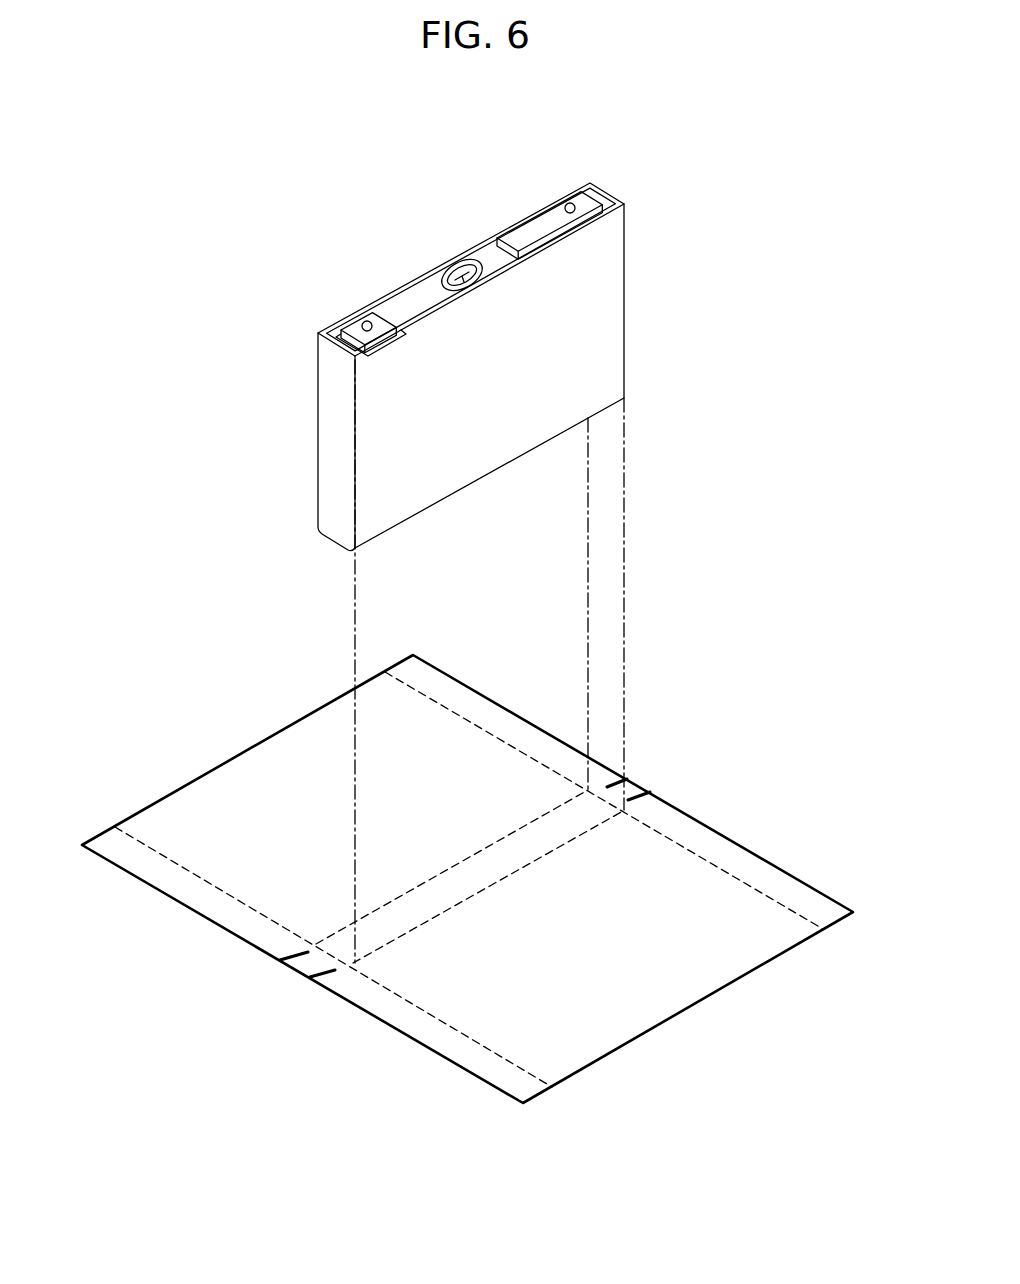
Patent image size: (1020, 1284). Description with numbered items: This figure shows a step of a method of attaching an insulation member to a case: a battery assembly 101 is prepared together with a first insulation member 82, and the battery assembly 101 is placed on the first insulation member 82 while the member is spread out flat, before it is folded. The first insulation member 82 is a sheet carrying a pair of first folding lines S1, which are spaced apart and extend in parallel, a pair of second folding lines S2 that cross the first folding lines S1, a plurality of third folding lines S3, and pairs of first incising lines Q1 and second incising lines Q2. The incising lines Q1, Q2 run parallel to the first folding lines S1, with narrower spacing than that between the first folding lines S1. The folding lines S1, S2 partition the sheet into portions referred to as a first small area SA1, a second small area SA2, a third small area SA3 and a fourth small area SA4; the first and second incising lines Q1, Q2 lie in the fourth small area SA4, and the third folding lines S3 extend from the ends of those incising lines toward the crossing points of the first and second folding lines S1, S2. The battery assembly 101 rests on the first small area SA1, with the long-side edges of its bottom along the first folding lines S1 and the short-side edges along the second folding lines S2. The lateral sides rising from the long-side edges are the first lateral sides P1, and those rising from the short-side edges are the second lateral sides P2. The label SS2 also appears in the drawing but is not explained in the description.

The battery assembly 101 is at (651, 329).
The first insulation member 82 is at (172, 770).
The first lateral sides P1 is at (611, 264).
The second lateral sides P2 is at (332, 431).
The first small area SA1 is at (465, 883).
The second small area SA2 is at (730, 950).
The third small area SA3 is at (440, 683).
The fourth small area SA4 is at (317, 958).
The second sub-area SS2 is at (252, 882).
The first folding lines S1 is at (520, 830).
The second folding lines S2 is at (482, 730).
The third folding lines S3 is at (597, 789).
The first incising lines Q1 is at (340, 975).
The second incising lines Q2 is at (660, 802).